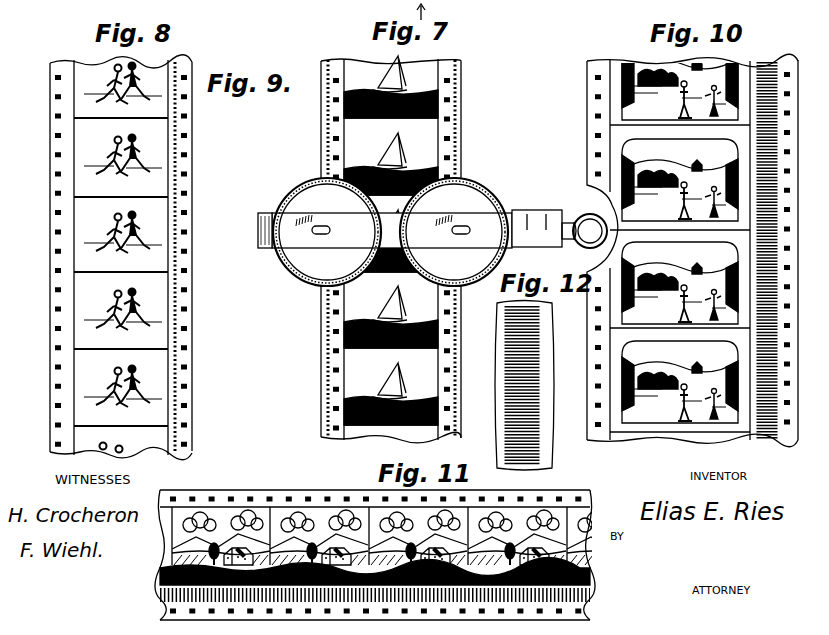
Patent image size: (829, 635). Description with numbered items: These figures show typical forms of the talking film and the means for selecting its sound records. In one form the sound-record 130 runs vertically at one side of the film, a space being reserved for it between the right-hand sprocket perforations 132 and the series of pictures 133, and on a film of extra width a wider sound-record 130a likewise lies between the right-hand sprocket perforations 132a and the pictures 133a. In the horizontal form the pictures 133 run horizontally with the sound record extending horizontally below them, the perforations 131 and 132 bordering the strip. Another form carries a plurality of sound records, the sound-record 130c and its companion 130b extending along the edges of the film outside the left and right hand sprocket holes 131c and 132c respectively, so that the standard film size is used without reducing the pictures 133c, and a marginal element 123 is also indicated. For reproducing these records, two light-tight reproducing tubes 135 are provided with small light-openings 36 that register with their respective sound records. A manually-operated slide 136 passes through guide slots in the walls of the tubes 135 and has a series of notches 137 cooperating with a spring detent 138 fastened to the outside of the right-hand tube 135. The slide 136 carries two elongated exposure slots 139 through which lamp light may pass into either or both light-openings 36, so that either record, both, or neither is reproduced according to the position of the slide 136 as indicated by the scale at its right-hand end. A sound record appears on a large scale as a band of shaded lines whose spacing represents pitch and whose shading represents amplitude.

In FIG. 9, the light-openings 36 is at (318, 237).
In FIG. 9, the lead wire 123 is at (245, 0).
In FIG. 8, the sound-record 130 is at (172, 168).
In FIG. 11, the sound-record 130 is at (593, 586).
In FIG. 12, the sound-record 130 is at (531, 353).
In FIG. 10, the sound-record 130a is at (765, 426).
In FIG. 9, the film margin 130b is at (456, 137).
In FIG. 9, the sound-record 130c is at (333, 138).
In FIG. 11, the perforations 131 is at (566, 498).
In FIG. 9, the left hand sprocket holes 131c is at (337, 369).
In FIG. 8, the right-hand sprocket perforations 132 is at (186, 351).
In FIG. 11, the right-hand sprocket perforations 132 is at (594, 607).
In FIG. 10, the right-hand sprocket perforations 132a is at (788, 427).
In FIG. 9, the right hand sprocket holes 132c is at (449, 99).
In FIG. 8, the pictures 133 is at (90, 284).
In FIG. 10, the pictures 133a is at (655, 420).
In FIG. 11, the pictures 133a is at (586, 508).
In FIG. 9, the picture frame 133c is at (356, 319).
In FIG. 9, the light-tight reproducing tubes 135 is at (298, 199).
In FIG. 9, the manually-operated slide 136 is at (259, 230).
In FIG. 9, the notches 137 is at (547, 219).
In FIG. 9, the spring detent 138 is at (524, 212).
In FIG. 9, the elongated exposure slots 139 is at (316, 237).